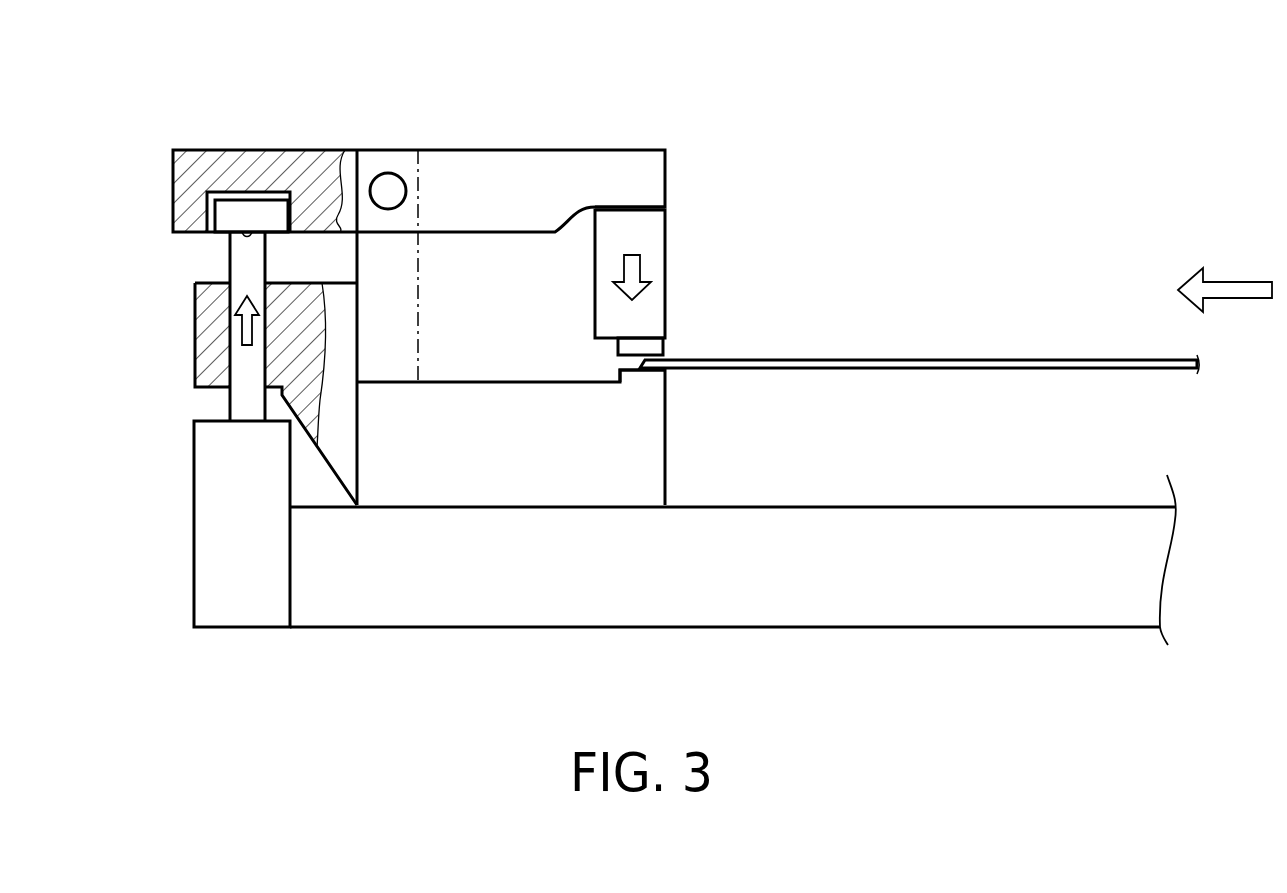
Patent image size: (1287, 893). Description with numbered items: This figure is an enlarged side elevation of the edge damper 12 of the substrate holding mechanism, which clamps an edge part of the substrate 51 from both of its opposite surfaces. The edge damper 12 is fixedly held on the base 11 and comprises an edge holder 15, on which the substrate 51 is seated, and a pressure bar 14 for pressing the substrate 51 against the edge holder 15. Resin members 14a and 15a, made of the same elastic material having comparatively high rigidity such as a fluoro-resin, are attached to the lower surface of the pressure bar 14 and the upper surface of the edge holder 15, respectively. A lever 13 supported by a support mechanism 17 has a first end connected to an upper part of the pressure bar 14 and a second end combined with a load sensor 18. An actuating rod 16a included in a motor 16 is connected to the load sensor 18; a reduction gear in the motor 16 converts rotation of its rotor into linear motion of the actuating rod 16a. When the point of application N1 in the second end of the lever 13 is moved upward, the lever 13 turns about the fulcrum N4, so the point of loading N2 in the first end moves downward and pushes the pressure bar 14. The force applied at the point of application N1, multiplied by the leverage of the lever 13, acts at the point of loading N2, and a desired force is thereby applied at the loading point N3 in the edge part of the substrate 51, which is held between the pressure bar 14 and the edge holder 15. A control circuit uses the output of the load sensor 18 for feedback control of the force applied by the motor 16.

The base 11 is at (1085, 507).
The edge damper 12 is at (519, 114).
The lever 13 is at (445, 172).
The pressure bar 14 is at (652, 236).
The resin member 14a is at (660, 345).
The edge holder 15 is at (445, 410).
The resin member 15a is at (660, 382).
The motor 16 is at (222, 497).
The actuating rod 16a is at (240, 262).
The support mechanism 17 is at (400, 296).
The load sensor 18 is at (290, 165).
The substrate 51 is at (1085, 360).
The point of application N1 is at (245, 172).
The point of loading N2 is at (648, 175).
The loading point N3 is at (665, 362).
The fulcrum N4 is at (387, 178).